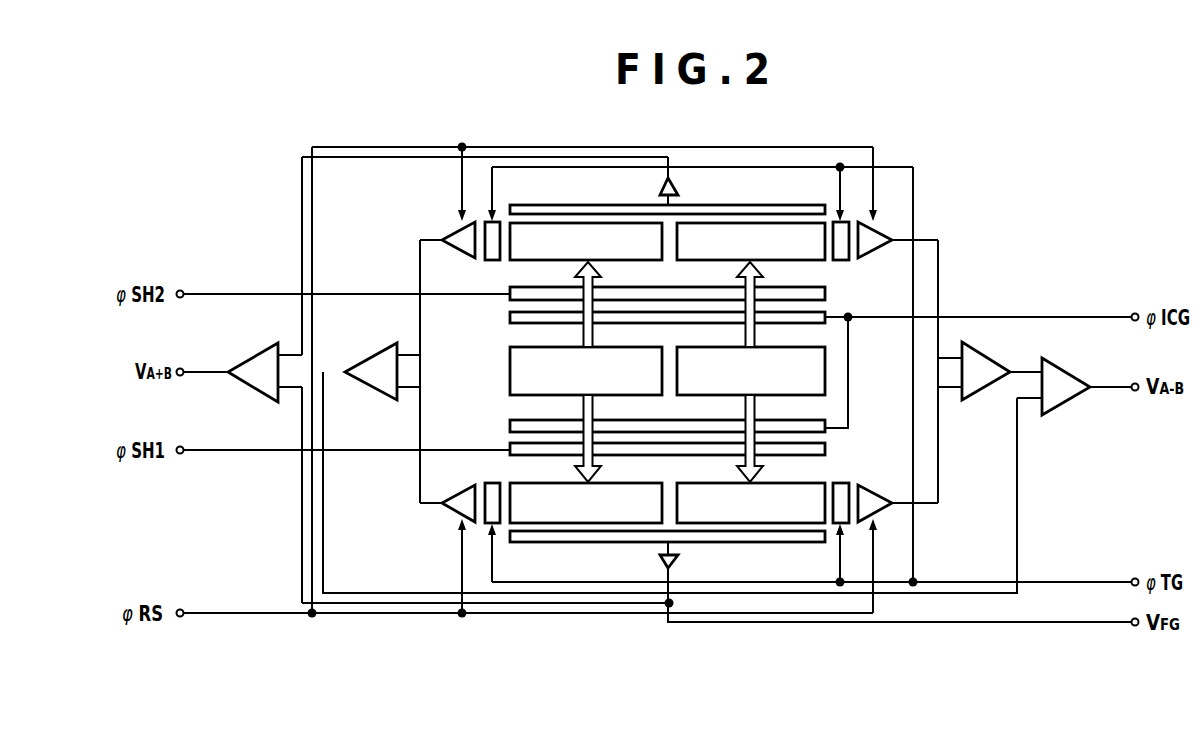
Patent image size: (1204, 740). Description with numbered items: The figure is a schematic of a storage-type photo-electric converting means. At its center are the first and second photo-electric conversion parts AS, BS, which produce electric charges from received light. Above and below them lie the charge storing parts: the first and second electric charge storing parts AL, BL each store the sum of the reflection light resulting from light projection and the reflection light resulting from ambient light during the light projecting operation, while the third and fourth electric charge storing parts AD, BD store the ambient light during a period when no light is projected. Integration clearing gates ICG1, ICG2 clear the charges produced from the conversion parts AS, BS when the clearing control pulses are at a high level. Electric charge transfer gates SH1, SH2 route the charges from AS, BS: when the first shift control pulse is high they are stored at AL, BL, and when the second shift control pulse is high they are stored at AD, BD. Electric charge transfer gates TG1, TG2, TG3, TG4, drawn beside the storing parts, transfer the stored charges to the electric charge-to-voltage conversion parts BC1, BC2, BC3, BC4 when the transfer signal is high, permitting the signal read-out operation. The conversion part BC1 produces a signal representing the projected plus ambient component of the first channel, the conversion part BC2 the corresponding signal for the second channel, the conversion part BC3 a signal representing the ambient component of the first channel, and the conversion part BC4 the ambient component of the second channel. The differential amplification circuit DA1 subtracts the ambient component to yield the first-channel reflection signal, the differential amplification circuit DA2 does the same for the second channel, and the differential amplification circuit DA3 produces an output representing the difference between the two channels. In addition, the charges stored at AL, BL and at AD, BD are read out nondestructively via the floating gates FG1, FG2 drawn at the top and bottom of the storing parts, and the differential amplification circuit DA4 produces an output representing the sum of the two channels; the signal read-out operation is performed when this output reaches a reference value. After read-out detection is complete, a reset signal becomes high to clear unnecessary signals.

The fourth electric charge storing part BD is at (586, 241).
The third electric charge storing part AD is at (751, 241).
The second photo-electric conversion part BS is at (586, 371).
The first photo-electric conversion part AS is at (751, 371).
The second electric charge storing part BL is at (586, 503).
The first electric charge storing part AL is at (751, 503).
The floating gate FG1 is at (680, 556).
The floating gate FG2 is at (682, 192).
The electric charge transfer gate SH1 is at (828, 446).
The electric charge transfer gate SH2 is at (808, 289).
The integration clearing gate ICG1 is at (828, 428).
The integration clearing gate ICG2 is at (832, 311).
The electric charge transfer gate TG1 is at (837, 482).
The electric charge transfer gate TG2 is at (492, 483).
The electric charge transfer gate TG3 is at (842, 260).
The electric charge transfer gate TG4 is at (492, 255).
The electric charge-to-voltage conversion part BC1 is at (876, 516).
The electric charge-to-voltage conversion part BC2 is at (456, 512).
The electric charge-to-voltage conversion part BC3 is at (877, 232).
The electric charge-to-voltage conversion part BC4 is at (455, 232).
The differential amplification circuit DA1 is at (984, 356).
The differential amplification circuit DA2 is at (373, 387).
The differential amplification circuit DA3 is at (1076, 378).
The differential amplification circuit DA4 is at (250, 385).